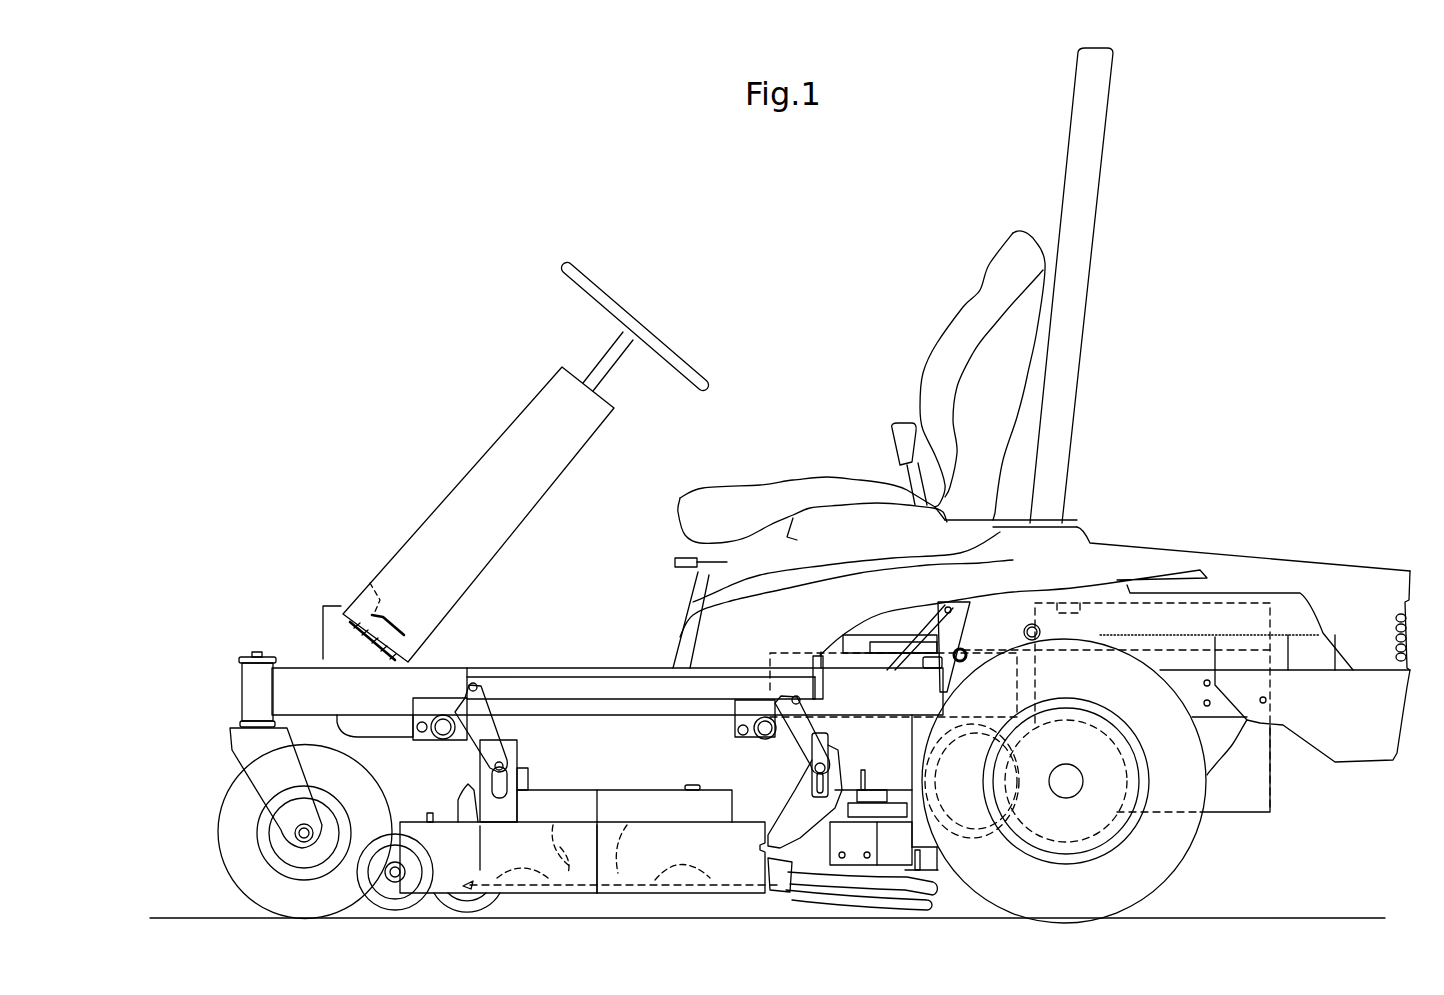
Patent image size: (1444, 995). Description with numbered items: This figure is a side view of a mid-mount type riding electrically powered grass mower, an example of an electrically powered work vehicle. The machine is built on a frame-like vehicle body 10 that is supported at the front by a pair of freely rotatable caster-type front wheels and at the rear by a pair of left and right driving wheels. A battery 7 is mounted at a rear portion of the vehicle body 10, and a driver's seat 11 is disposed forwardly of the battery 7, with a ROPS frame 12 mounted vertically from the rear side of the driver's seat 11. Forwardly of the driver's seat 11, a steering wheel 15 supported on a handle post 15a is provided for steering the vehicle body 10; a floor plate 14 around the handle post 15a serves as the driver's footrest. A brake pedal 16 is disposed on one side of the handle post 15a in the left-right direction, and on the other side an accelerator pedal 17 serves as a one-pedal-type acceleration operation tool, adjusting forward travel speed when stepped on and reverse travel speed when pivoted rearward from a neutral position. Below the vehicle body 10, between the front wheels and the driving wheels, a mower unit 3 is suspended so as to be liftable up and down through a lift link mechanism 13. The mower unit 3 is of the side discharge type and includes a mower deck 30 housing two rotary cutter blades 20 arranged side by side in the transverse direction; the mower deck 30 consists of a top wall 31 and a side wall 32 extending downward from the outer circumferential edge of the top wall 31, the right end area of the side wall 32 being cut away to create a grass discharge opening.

The mower unit 3 is at (582, 846).
The battery 7 is at (1268, 800).
The vehicle body 10 is at (305, 650).
The driver's seat 11 is at (932, 343).
The ROPS frame 12 is at (1104, 160).
The lift link mechanism 13 is at (447, 688).
The floor plate 14 is at (553, 668).
The steering wheel 15 is at (664, 346).
The handle post 15a is at (484, 452).
The brake pedal 16 is at (397, 622).
The accelerator pedal 17 is at (383, 598).
The cutter blade 20 is at (697, 853).
The mower deck 30 is at (652, 814).
The top wall 31 is at (445, 817).
The side wall 32 is at (735, 883).